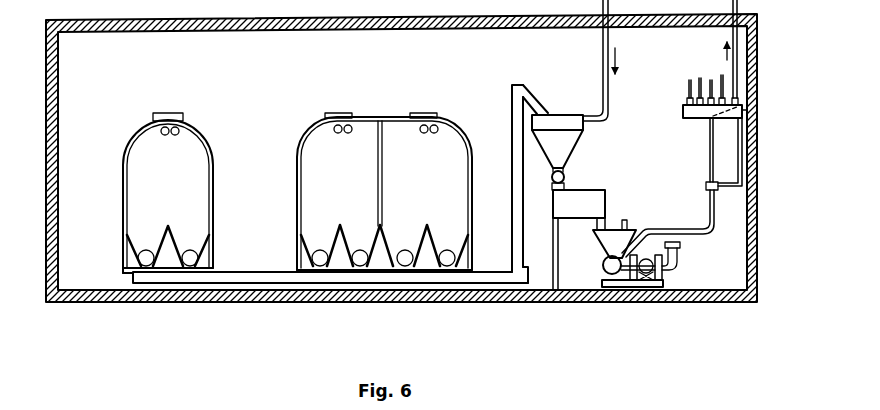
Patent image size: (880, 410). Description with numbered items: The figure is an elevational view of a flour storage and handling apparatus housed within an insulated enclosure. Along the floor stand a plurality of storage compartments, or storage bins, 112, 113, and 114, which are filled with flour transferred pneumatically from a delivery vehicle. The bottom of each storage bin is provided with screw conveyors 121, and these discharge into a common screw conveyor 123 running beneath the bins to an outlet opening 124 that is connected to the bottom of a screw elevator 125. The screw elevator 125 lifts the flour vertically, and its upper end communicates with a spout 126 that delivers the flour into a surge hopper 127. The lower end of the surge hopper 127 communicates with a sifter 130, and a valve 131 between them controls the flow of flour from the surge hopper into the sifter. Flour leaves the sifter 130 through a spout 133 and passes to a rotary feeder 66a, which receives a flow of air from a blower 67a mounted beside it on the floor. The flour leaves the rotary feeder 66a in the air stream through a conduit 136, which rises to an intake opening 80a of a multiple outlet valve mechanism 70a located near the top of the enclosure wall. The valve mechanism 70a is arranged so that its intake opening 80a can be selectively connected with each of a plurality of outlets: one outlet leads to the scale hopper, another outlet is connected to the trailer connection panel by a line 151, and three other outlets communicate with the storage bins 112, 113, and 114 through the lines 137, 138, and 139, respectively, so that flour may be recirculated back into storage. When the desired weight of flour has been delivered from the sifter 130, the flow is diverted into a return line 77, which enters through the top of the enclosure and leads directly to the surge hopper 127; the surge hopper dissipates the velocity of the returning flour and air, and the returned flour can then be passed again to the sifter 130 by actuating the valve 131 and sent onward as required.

The storage compartment 112 is at (118, 152).
The storage compartment 113 is at (290, 155).
The storage compartment 114 is at (474, 145).
The screw conveyors 121 is at (144, 250).
The screw conveyor 123 is at (233, 272).
The outlet opening 124 is at (520, 272).
The screw elevator 125 is at (512, 103).
The spout 126 is at (530, 100).
The surge hopper 127 is at (580, 140).
The valve 131 is at (565, 178).
The return line 77 is at (603, 50).
The sifter 130 is at (605, 197).
The spout 133 is at (603, 228).
The conduit 136 is at (711, 205).
The rotary feeder 66a is at (605, 265).
The blower 67a is at (665, 282).
The intake opening 80a is at (710, 118).
The line 137 is at (710, 78).
The line 138 is at (697, 78).
The line 139 is at (689, 93).
The line 151 is at (720, 78).
The multiple outlet valve mechanism 70a is at (735, 122).